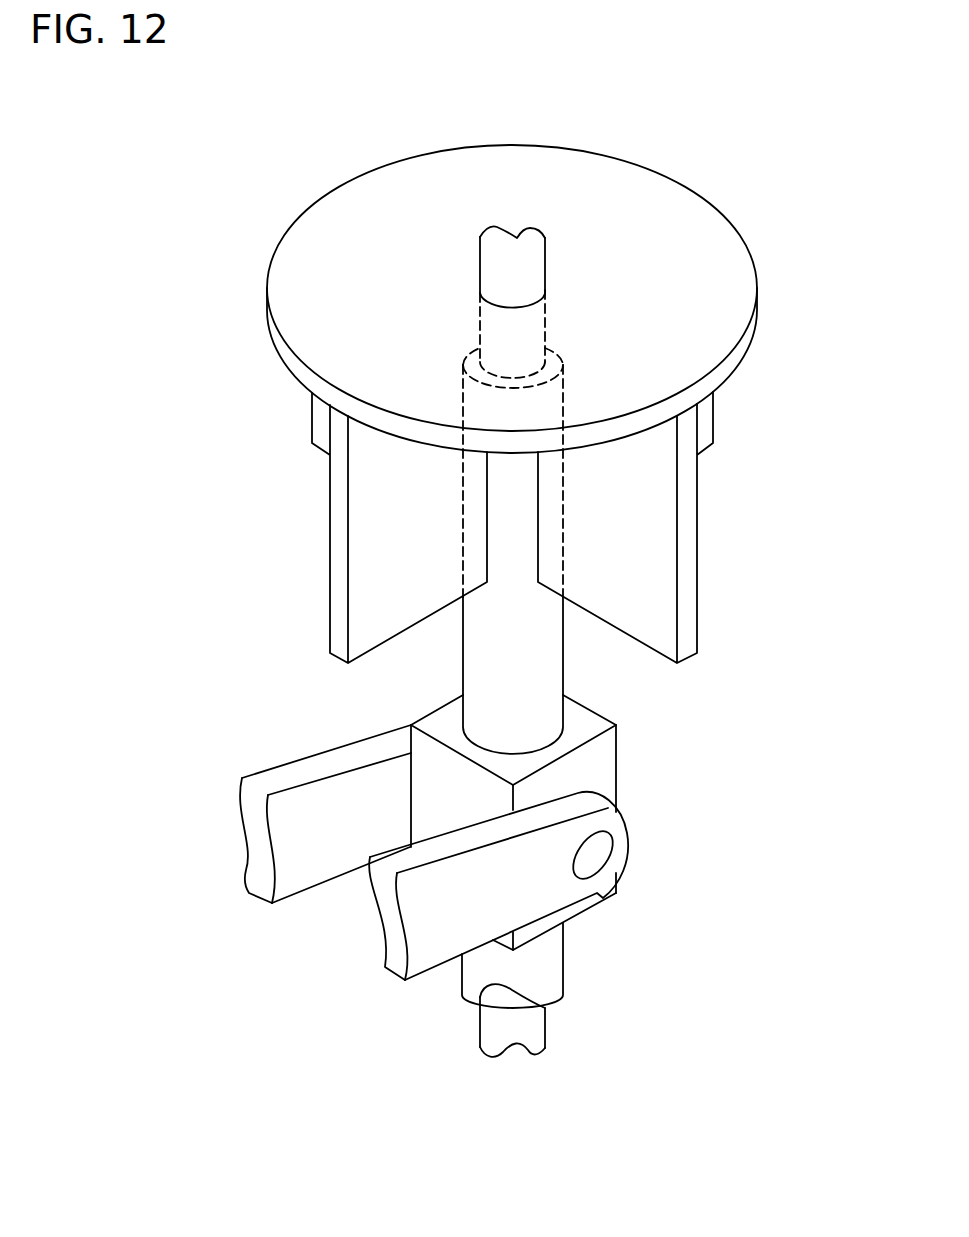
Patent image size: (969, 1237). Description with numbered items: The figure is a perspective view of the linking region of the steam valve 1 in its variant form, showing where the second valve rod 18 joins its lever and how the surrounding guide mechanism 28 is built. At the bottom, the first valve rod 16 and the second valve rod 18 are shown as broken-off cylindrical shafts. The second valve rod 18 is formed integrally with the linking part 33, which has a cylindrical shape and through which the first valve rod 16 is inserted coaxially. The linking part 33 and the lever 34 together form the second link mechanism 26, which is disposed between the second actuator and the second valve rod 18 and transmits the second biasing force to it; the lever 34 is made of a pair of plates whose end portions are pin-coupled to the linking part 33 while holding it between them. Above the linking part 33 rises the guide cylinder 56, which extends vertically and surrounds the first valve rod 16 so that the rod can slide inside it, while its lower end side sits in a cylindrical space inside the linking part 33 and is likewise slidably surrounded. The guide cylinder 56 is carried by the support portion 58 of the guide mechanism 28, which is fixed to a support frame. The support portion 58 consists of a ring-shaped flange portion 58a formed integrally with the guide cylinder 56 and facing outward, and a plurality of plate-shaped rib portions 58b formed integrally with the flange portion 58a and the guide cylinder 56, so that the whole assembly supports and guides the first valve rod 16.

The steam valve 1 is at (719, 157).
The guide mechanism 28 is at (787, 327).
The support portion 58 is at (687, 560).
The flange portion 58a is at (731, 260).
The rib portions 58b is at (687, 623).
The guide cylinder 56 is at (563, 665).
The linking part 33 is at (617, 760).
The lever 34 is at (313, 755).
The second link mechanism 26 is at (275, 765).
The second valve rod 18 is at (565, 967).
The first valve rod 16 is at (547, 1028).